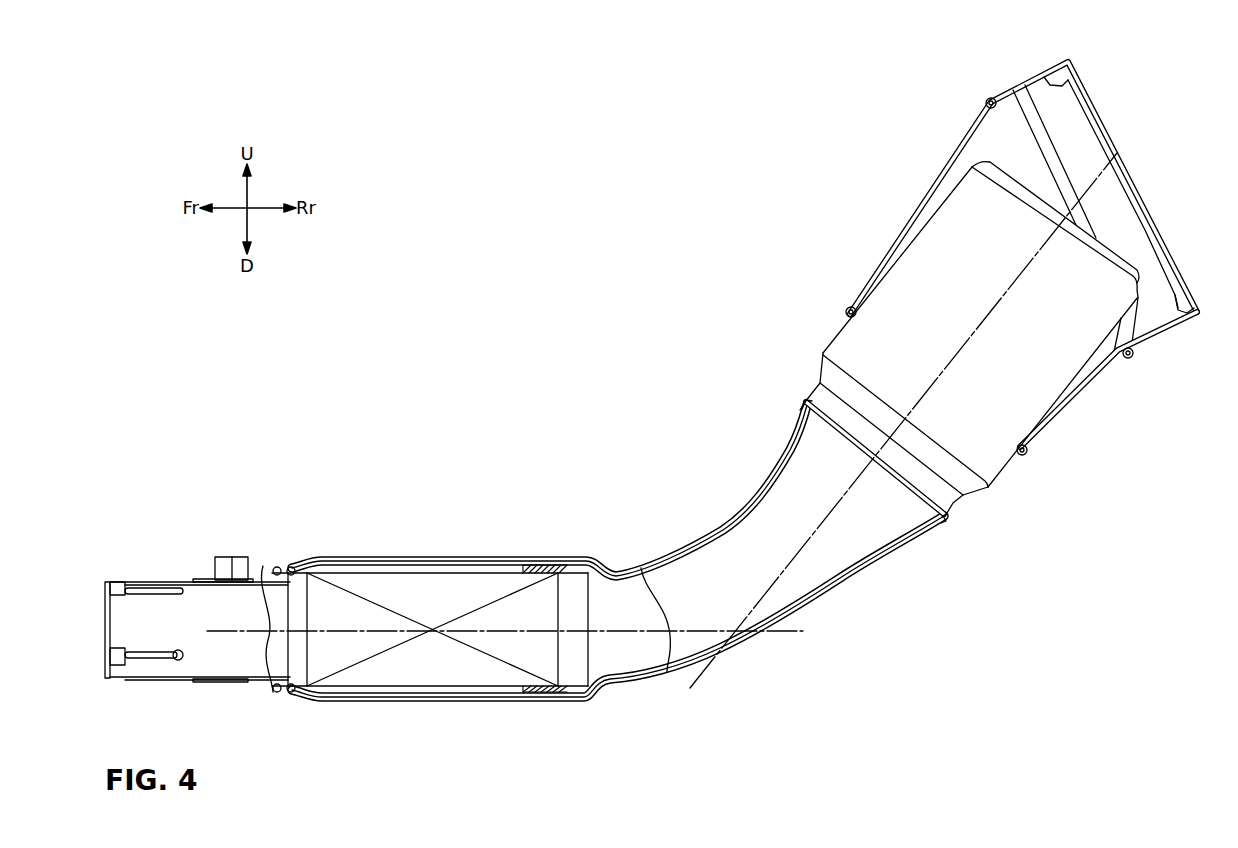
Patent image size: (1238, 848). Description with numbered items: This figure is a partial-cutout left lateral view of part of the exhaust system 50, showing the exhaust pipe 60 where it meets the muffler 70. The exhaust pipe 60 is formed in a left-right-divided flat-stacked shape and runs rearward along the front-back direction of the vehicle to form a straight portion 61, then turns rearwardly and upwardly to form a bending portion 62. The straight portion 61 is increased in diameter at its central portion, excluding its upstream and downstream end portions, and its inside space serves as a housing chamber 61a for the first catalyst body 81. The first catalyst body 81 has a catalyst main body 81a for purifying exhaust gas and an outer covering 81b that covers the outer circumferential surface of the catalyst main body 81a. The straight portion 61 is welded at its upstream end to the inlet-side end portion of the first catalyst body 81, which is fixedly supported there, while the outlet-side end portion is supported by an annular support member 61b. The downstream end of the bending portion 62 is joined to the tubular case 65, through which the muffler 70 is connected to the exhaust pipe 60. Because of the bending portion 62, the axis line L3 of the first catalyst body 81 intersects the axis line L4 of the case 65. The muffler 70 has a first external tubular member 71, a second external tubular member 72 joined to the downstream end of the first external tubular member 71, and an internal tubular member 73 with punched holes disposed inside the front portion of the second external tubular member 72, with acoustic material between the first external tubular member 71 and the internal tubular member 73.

The exhaust system 50 is at (272, 521).
The exhaust pipe 60 is at (157, 578).
The straight portion 61 is at (387, 556).
The housing chamber 61a is at (472, 558).
The annular support member 61b is at (553, 565).
The bending portion 62 is at (817, 601).
The case 65 is at (1010, 416).
The muffler 70 is at (977, 122).
The first external tubular member 71 is at (1080, 393).
The second external tubular member 72 is at (1170, 330).
The internal tubular member 73 is at (1113, 197).
The first catalyst body 81 is at (415, 696).
The catalyst main body 81a is at (537, 650).
The outer covering 81b is at (479, 699).
The axis line of the first catalyst body L3 is at (237, 632).
The axis line of the case L4 is at (857, 480).